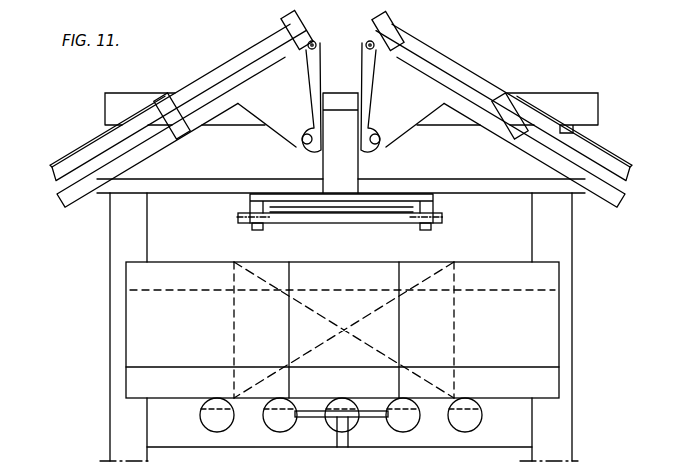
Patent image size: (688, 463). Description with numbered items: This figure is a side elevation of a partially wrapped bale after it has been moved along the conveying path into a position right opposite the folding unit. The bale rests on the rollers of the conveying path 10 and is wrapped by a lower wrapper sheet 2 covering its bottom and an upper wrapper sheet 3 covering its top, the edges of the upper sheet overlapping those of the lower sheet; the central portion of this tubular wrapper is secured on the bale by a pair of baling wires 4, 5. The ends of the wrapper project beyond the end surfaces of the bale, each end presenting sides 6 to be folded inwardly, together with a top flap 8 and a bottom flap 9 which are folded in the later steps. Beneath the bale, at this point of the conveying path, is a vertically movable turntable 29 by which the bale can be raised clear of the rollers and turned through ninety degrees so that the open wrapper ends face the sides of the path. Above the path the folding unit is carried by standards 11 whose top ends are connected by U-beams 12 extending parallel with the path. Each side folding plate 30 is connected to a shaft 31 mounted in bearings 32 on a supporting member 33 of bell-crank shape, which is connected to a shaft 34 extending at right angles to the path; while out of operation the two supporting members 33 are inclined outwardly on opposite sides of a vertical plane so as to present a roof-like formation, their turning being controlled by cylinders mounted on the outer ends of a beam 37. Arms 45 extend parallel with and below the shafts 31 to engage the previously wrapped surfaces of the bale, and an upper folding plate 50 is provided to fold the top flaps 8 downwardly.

The lower wrapper sheet 2 is at (437, 377).
The upper wrapper sheet 3 is at (430, 262).
The baling wire 4 is at (288, 335).
The baling wire 5 is at (400, 332).
The side of projecting wrapper end 6 is at (132, 378).
The top flap 8 is at (181, 266).
The bottom flap 9 is at (146, 393).
The conveying path rollers 10 is at (202, 409).
The standard 11 is at (107, 402).
The U-beam 12 is at (113, 104).
The turntable 29 is at (318, 416).
The side folding plate 30 is at (68, 153).
The shaft 31 is at (223, 64).
The bearing 32 is at (280, 30).
The supporting member 33 is at (277, 125).
The shaft 34 is at (303, 147).
The beam 37 is at (177, 190).
The arm 45 is at (66, 202).
The upper folding plate 50 is at (326, 225).